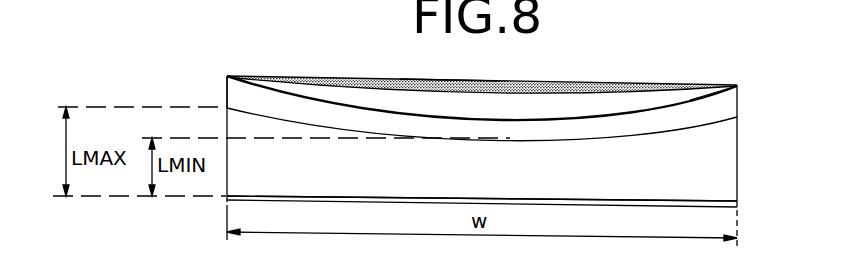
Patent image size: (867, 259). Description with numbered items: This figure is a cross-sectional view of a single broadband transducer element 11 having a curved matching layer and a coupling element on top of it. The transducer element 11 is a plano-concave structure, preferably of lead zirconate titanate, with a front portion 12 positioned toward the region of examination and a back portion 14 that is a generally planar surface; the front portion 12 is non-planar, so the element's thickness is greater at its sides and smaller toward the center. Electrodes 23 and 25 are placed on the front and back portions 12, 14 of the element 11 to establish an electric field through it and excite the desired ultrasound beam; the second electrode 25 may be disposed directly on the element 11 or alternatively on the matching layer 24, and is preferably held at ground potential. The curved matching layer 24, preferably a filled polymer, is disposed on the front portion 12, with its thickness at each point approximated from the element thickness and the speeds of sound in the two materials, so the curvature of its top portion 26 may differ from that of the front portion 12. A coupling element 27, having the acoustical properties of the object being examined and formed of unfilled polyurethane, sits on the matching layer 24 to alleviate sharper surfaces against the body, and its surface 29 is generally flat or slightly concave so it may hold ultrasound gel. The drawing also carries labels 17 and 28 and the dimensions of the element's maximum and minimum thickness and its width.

The transducer element 11 is at (613, 182).
The front portion 12 is at (677, 128).
The back portion 14 is at (423, 199).
The upper portion 17 is at (198, 9).
The electrode 23 is at (700, 209).
The matching layer 24 is at (243, 101).
The second electrode 25 is at (690, 100).
The top portion 26 is at (512, 122).
The coupling element 27 is at (517, 102).
The coating layer 28 is at (605, 85).
The surface 29 is at (443, 85).